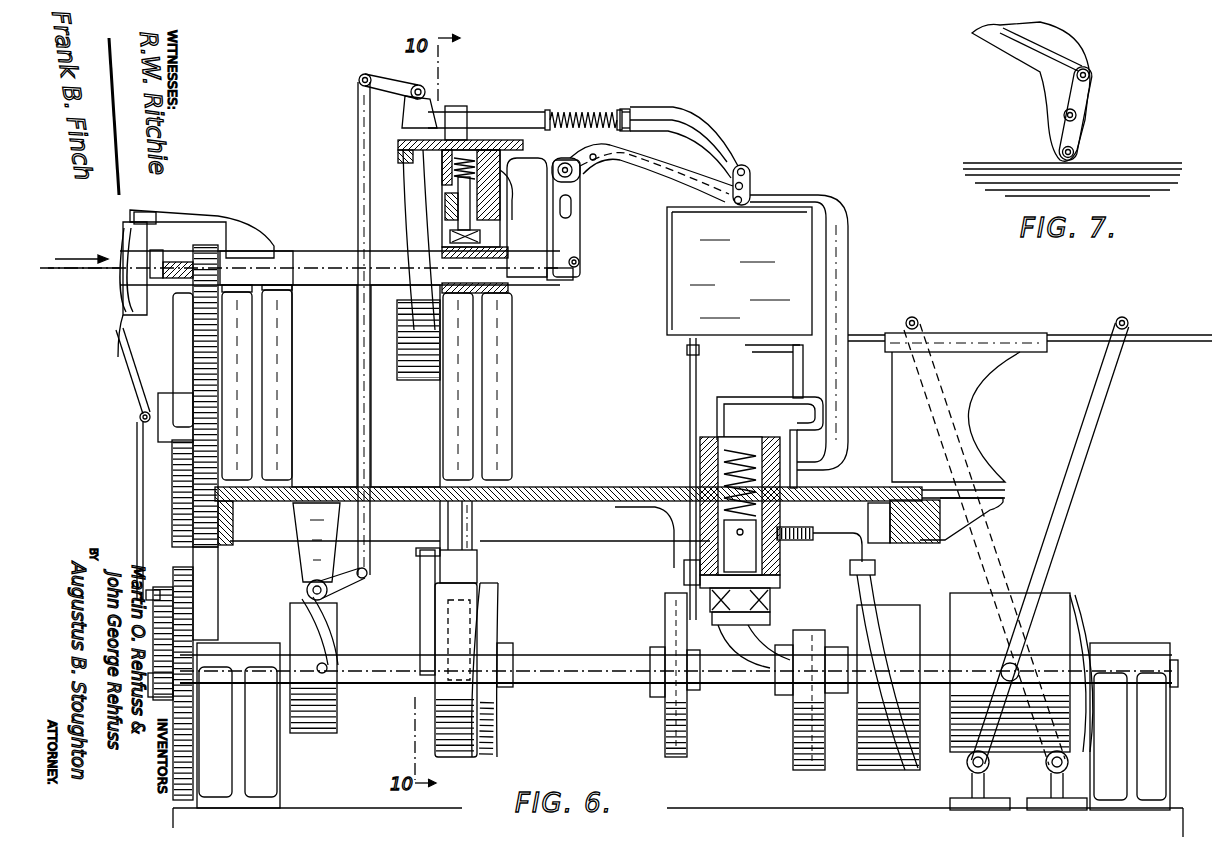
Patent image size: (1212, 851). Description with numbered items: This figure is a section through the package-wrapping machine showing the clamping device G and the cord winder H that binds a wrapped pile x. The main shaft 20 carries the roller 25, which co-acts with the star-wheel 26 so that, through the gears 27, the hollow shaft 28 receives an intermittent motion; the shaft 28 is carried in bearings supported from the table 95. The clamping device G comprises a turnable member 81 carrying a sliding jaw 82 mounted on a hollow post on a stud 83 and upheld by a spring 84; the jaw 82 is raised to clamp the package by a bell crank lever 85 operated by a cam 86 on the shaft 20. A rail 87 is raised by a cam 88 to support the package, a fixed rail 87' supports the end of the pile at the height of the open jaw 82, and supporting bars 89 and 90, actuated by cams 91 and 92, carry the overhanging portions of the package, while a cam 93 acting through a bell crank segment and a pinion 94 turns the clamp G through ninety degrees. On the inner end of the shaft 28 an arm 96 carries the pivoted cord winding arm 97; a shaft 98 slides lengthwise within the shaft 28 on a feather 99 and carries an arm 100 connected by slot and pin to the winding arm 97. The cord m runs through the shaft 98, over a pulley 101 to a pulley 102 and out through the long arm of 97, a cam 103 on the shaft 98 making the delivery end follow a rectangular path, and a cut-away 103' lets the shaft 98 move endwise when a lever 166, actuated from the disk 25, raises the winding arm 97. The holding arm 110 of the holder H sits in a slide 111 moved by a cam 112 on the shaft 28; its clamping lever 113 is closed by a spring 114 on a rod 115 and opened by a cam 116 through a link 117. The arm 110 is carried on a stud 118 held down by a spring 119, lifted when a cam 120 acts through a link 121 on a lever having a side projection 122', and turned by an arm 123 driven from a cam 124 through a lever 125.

In FIG. 6, the main shaft 20 is at (565, 655).
In FIG. 6, the roller 25 is at (160, 578).
In FIG. 6, the star-wheel 26 is at (174, 474).
In FIG. 6, the gears 27 is at (202, 314).
In FIG. 6, the hollow shaft 28 is at (316, 258).
In FIG. 6, the turnable member 81 is at (843, 220).
In FIG. 6, the sliding jaw 82 is at (781, 348).
In FIG. 6, the stud 83 is at (770, 558).
In FIG. 6, the spring 84 is at (708, 463).
In FIG. 6, the bell crank lever 85 is at (745, 641).
In FIG. 6, the cam 86 is at (798, 738).
In FIG. 6, the rail 87 is at (666, 479).
In FIG. 6, the fixed rail 87' is at (770, 408).
In FIG. 6, the cam 88 is at (665, 621).
In FIG. 6, the supporting bar 89 is at (1190, 326).
In FIG. 6, the supporting bar 90 is at (867, 332).
In FIG. 6, the cam 91 is at (962, 600).
In FIG. 6, the cam 92 is at (1058, 600).
In FIG. 6, the cam 93 is at (905, 583).
In FIG. 6, the pinion 94 is at (838, 526).
In FIG. 6, the table 95 is at (562, 487).
In FIG. 6, the arm 96 is at (506, 270).
In FIG. 6, the cord winding arm 97 is at (656, 176).
In FIG. 6, the shaft 98 is at (169, 257).
In FIG. 6, the feather 99 is at (181, 266).
In FIG. 6, the arm 100 is at (572, 233).
In FIG. 6, the pulley 101 is at (582, 263).
In FIG. 6, the pulley 102 is at (598, 166).
In FIG. 6, the cam 103 is at (113, 289).
In FIG. 6, the cut-away 103' is at (118, 214).
In FIG. 6, the holding arm 110 is at (705, 136).
In FIG. 7, the holding arm 110 is at (1040, 86).
In FIG. 6, the slide 111 is at (524, 145).
In FIG. 6, the cam 112 is at (407, 197).
In FIG. 7, the clamping lever 113 is at (1080, 101).
In FIG. 6, the spring 114 is at (586, 113).
In FIG. 6, the rod 115 is at (652, 116).
In FIG. 7, the rod 115 is at (1056, 56).
In FIG. 6, the cam 116 is at (334, 621).
In FIG. 6, the link 117 is at (358, 388).
In FIG. 6, the stud 118 is at (463, 213).
In FIG. 6, the spring 119 is at (450, 163).
In FIG. 6, the cam 120 is at (436, 629).
In FIG. 6, the link 121 is at (474, 529).
In FIG. 6, the side projection 122' is at (505, 280).
In FIG. 6, the arm 123 is at (447, 207).
In FIG. 6, the cam 124 is at (489, 626).
In FIG. 6, the lever 125 is at (478, 567).
In FIG. 6, the lever 166 is at (128, 379).
In FIG. 6, the cord winder H is at (486, 107).
In FIG. 6, the clamping device G is at (855, 332).
In FIG. 6, the cord m is at (600, 211).
In FIG. 6, the pile x is at (665, 308).
In FIG. 7, the pile x is at (1115, 164).